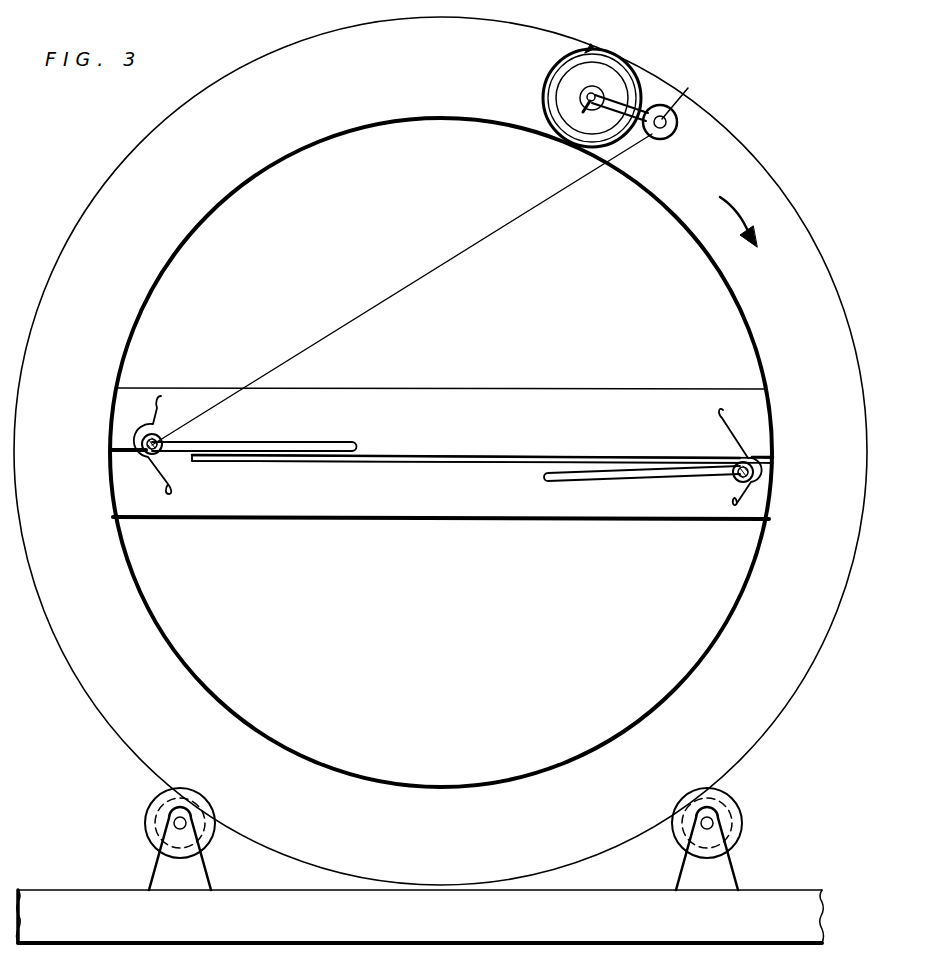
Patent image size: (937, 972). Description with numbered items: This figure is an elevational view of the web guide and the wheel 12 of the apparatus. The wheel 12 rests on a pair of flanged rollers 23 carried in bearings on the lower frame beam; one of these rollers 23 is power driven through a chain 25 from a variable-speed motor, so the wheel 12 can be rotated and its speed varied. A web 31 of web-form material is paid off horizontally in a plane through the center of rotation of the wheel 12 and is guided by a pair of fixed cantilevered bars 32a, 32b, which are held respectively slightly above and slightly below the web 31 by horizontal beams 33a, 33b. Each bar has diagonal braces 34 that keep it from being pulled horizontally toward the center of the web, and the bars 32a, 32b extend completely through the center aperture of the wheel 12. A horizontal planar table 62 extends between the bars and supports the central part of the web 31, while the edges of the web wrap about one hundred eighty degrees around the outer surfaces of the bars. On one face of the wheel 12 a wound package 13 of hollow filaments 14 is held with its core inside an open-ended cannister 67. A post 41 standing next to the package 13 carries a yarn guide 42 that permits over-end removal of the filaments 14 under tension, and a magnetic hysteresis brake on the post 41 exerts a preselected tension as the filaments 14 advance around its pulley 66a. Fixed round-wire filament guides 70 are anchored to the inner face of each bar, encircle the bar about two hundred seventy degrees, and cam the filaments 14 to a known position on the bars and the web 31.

The wheel 12 is at (415, 121).
The wound package 13 is at (560, 82).
The hollow filaments 14 is at (421, 278).
The flanged rollers 23 is at (740, 812).
The chain 25 is at (145, 818).
The web 31 is at (218, 456).
The cantilevered bar 32a is at (150, 430).
The cantilevered bar 32b is at (757, 477).
The horizontal beam 33a is at (478, 421).
The horizontal beam 33b is at (421, 499).
The diagonal braces 34 is at (290, 441).
The post 41 is at (687, 96).
The yarn guide 42 is at (597, 93).
The table 62 is at (300, 463).
The pulley 66a is at (676, 129).
The cannister 67 is at (599, 49).
The filament guide 70 is at (163, 466).